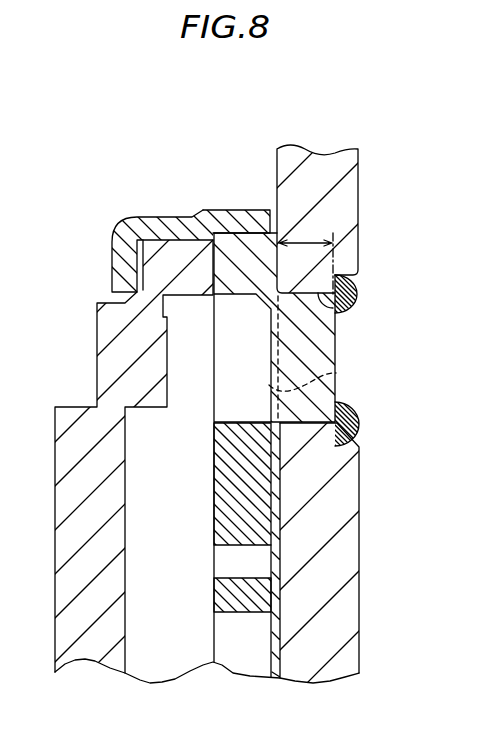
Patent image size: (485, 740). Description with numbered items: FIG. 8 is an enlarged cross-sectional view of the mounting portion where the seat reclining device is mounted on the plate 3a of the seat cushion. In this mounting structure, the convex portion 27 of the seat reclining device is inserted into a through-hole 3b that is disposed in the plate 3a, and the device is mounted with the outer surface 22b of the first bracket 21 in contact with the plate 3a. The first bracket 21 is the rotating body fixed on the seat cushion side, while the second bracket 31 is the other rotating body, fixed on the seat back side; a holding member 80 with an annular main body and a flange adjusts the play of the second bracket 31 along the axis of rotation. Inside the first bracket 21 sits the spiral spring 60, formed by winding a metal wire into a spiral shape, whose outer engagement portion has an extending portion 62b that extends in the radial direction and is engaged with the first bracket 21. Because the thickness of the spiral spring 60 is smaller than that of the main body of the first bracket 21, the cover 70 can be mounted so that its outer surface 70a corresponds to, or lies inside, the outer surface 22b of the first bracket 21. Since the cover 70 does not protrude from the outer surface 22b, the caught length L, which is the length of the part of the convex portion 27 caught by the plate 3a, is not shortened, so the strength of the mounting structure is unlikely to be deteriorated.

The plate 3a is at (359, 182).
The through-hole 3b is at (357, 297).
The first bracket 21 is at (253, 243).
The outer surface 22b is at (337, 373).
The convex portion 27 is at (337, 339).
The second bracket 31 is at (95, 331).
The spiral spring 60 is at (204, 594).
The extending portion 62b is at (215, 484).
The cover 70 is at (284, 666).
The outer surface 70a is at (281, 497).
The holding member 80 is at (153, 217).
The caught length L is at (303, 242).